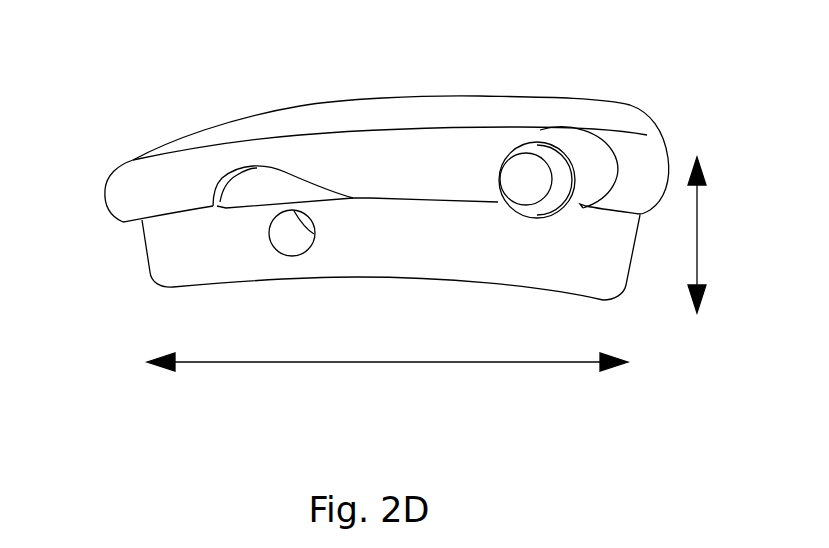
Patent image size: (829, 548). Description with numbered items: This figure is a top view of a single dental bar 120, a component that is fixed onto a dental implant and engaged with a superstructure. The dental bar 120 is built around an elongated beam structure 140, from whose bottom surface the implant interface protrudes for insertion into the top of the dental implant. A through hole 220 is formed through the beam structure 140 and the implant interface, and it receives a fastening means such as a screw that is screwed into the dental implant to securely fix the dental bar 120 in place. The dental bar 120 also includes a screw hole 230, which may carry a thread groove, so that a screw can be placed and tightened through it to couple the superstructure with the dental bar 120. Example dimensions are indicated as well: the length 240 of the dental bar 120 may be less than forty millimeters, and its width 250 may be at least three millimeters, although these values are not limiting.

The dental bar 120 is at (410, 155).
The beam structure 140 is at (102, 142).
The through hole 220 is at (504, 142).
The screw hole 230 is at (291, 267).
The length 240 is at (387, 387).
The width 250 is at (742, 235).